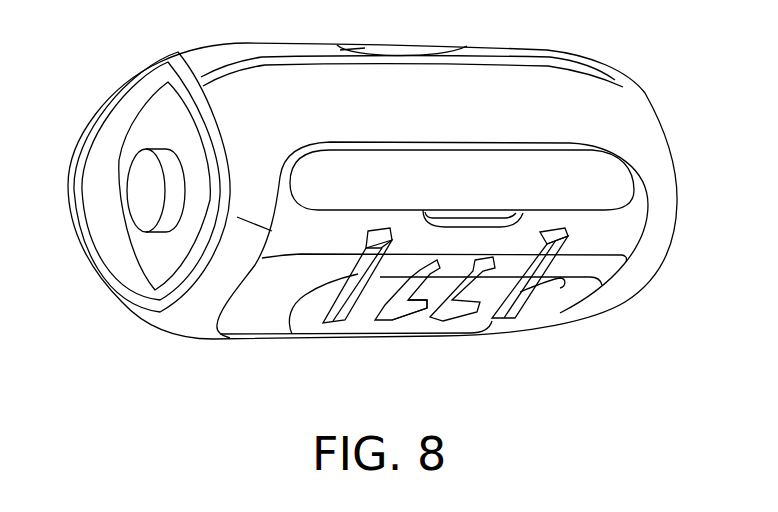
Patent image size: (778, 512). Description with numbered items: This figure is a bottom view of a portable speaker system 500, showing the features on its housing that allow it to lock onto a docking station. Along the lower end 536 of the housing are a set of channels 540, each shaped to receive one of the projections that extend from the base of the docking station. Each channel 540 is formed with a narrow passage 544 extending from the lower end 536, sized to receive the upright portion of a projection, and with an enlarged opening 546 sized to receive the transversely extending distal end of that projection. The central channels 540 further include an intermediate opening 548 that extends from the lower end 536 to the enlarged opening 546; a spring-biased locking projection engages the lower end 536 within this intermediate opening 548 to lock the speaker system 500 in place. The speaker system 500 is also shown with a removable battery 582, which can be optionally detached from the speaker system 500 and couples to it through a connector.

The portable speaker system 500 is at (112, 81).
The removable battery 582 is at (165, 203).
The lower end 536 is at (276, 304).
The channel 540 is at (521, 208).
The enlarged opening 546 is at (484, 258).
The narrow passage 544 is at (430, 317).
The intermediate opening 548 is at (428, 306).